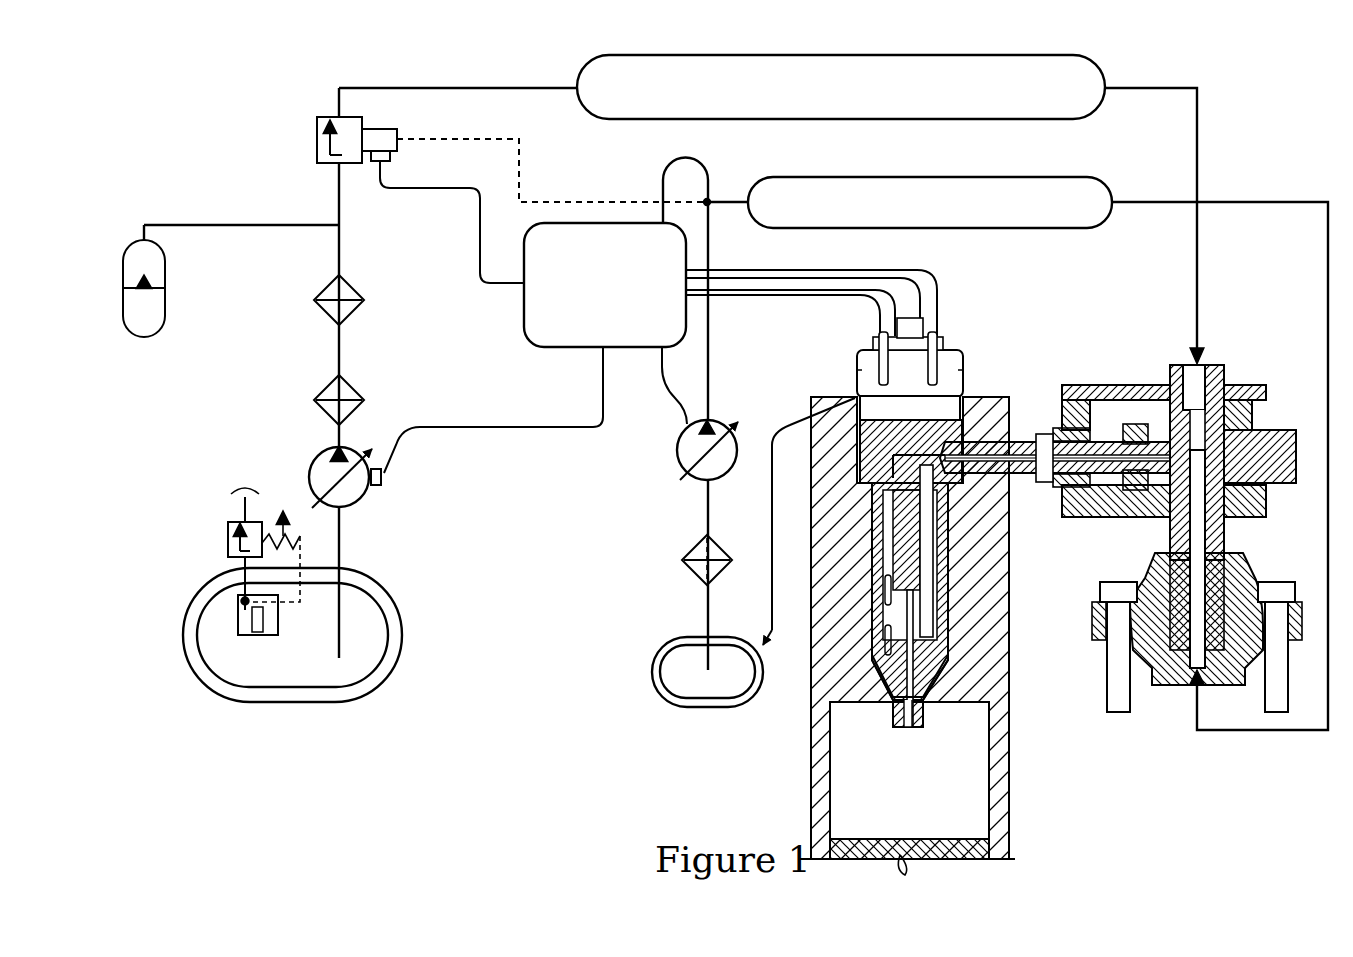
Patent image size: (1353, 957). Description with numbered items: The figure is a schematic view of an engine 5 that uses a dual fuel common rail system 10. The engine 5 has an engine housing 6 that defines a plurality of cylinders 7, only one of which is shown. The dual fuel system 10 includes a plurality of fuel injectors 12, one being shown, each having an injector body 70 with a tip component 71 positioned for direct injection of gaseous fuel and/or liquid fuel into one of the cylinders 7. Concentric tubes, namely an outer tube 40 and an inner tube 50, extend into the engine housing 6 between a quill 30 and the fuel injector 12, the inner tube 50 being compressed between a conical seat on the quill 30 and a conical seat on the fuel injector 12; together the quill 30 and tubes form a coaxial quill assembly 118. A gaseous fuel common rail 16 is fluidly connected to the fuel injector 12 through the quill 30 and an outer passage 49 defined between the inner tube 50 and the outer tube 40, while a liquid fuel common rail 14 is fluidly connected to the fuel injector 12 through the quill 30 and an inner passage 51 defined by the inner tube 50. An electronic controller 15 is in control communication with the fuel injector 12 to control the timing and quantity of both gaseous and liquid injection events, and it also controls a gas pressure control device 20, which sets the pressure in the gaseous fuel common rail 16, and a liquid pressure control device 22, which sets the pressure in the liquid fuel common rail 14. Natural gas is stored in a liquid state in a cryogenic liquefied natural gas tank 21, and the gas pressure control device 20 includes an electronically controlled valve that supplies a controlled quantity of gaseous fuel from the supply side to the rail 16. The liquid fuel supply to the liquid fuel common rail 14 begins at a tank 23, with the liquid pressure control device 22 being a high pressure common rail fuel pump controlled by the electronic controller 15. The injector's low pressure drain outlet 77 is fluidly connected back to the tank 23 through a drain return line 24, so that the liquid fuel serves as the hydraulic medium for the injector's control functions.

The dual fuel common rail system 10 is at (1250, 90).
The gas pressure control device 20 is at (288, 180).
The cryogenic liquefied natural gas tank 21 is at (183, 632).
The gaseous fuel common rail 16 is at (1077, 119).
The liquid fuel common rail 14 is at (1077, 228).
The electronic controller 15 is at (548, 347).
The liquid pressure control device 22 is at (648, 478).
The tank 23 is at (652, 668).
The drain return line 24 is at (772, 505).
The fuel injector 12 is at (962, 330).
The low pressure drain outlet 77 is at (862, 403).
The outer tube 40 is at (1012, 484).
The injector body 70 is at (878, 636).
The tip component 71 is at (923, 718).
The engine housing 6 is at (1009, 575).
The cylinder 7 is at (986, 748).
The engine 5 is at (1003, 362).
The inner tube 50 is at (1010, 452).
The outer passage 49 is at (1066, 418).
The inner passage 51 is at (1120, 482).
The quill 30 is at (1226, 364).
The coaxial quill assembly 118 is at (1228, 352).